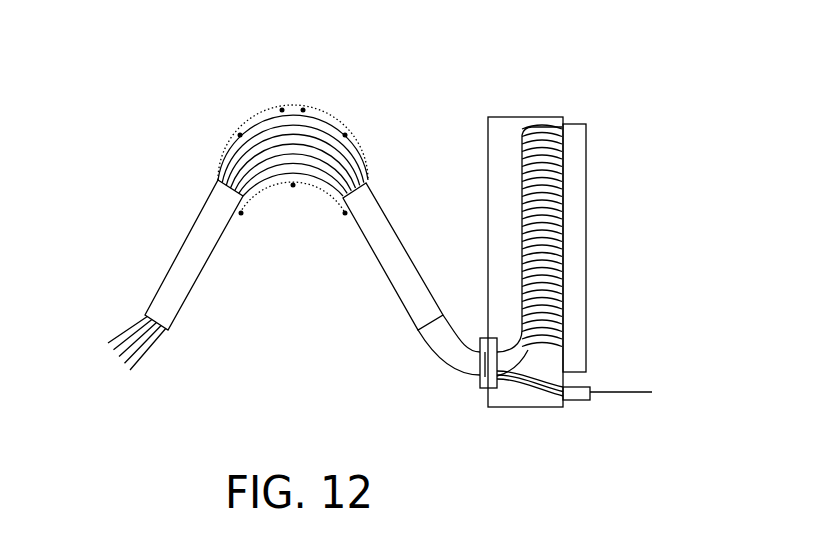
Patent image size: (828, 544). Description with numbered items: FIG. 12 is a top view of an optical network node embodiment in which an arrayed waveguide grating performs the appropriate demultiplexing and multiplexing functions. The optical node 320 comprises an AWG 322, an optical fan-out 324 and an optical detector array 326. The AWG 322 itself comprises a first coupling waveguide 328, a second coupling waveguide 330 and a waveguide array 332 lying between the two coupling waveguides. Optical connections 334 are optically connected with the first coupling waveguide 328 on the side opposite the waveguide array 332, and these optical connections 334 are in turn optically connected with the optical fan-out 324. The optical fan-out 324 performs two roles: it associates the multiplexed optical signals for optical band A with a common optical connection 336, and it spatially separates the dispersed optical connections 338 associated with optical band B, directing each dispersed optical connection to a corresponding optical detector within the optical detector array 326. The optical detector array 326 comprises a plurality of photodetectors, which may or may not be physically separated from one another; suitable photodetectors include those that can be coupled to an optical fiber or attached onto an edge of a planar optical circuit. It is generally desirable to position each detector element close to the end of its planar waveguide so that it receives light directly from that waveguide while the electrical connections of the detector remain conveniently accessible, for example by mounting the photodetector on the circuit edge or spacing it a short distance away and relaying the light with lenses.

The optical node 320 is at (243, 377).
The AWG 322 is at (215, 140).
The optical fan-out 324 is at (517, 410).
The optical detector array 326 is at (588, 183).
The first coupling waveguide 328 is at (383, 273).
The second coupling waveguide 330 is at (187, 233).
The waveguide array 332 is at (303, 110).
The optical connections 334 is at (430, 348).
The common optical connection 336 is at (617, 392).
The dispersed optical connections 338 is at (537, 118).